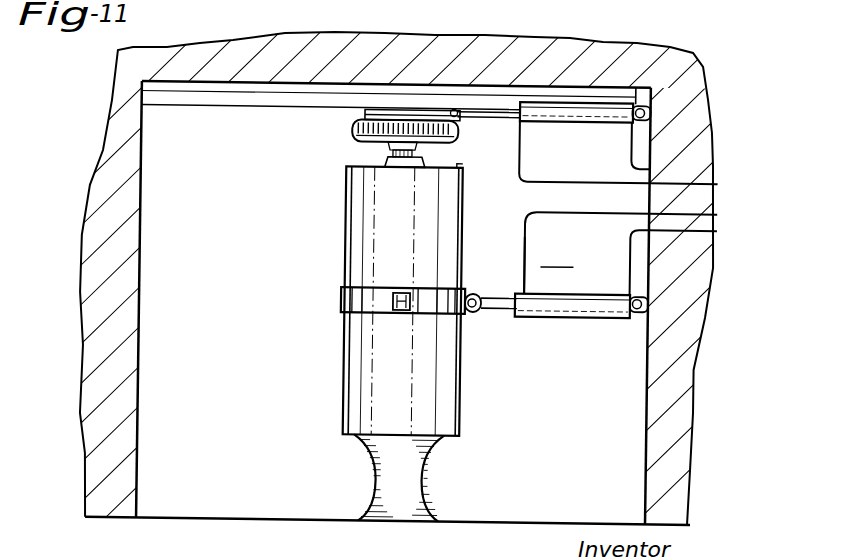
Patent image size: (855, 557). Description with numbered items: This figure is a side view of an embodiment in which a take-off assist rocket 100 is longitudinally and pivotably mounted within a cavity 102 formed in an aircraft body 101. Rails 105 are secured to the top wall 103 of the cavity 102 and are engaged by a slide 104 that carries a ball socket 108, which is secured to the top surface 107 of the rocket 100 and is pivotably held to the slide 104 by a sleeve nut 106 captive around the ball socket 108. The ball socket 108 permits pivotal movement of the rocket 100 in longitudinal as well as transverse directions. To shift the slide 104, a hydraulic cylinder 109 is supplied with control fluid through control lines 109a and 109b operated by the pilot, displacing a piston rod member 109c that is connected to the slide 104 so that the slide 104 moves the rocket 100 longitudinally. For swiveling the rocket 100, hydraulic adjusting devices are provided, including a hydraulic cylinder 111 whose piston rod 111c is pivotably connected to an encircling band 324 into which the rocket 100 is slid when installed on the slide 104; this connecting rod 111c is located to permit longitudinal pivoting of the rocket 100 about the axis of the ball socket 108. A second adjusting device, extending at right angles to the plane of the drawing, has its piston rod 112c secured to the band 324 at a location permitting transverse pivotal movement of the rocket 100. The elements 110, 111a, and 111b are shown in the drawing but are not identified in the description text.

The rocket 100 is at (460, 432).
The aircraft body 101 is at (704, 206).
The cavity 102 is at (586, 253).
The top wall 103 is at (604, 42).
The slide 104 is at (364, 113).
The rails 105 is at (209, 100).
The sleeve nut 106 is at (456, 132).
The top surface 107 is at (461, 166).
The ball socket 108 is at (390, 147).
The hydraulic cylinder 109 is at (545, 120).
The control line 109a is at (581, 180).
The control line 109b is at (628, 137).
The piston rod member 109c is at (483, 109).
The wall 110 is at (650, 150).
The hydraulic cylinder 111 is at (537, 313).
The chamber wall 111a is at (524, 248).
The chamber end wall 111b is at (630, 267).
The piston rod 111c is at (492, 314).
The piston rod 112c is at (390, 312).
The encircling band 324 is at (340, 301).